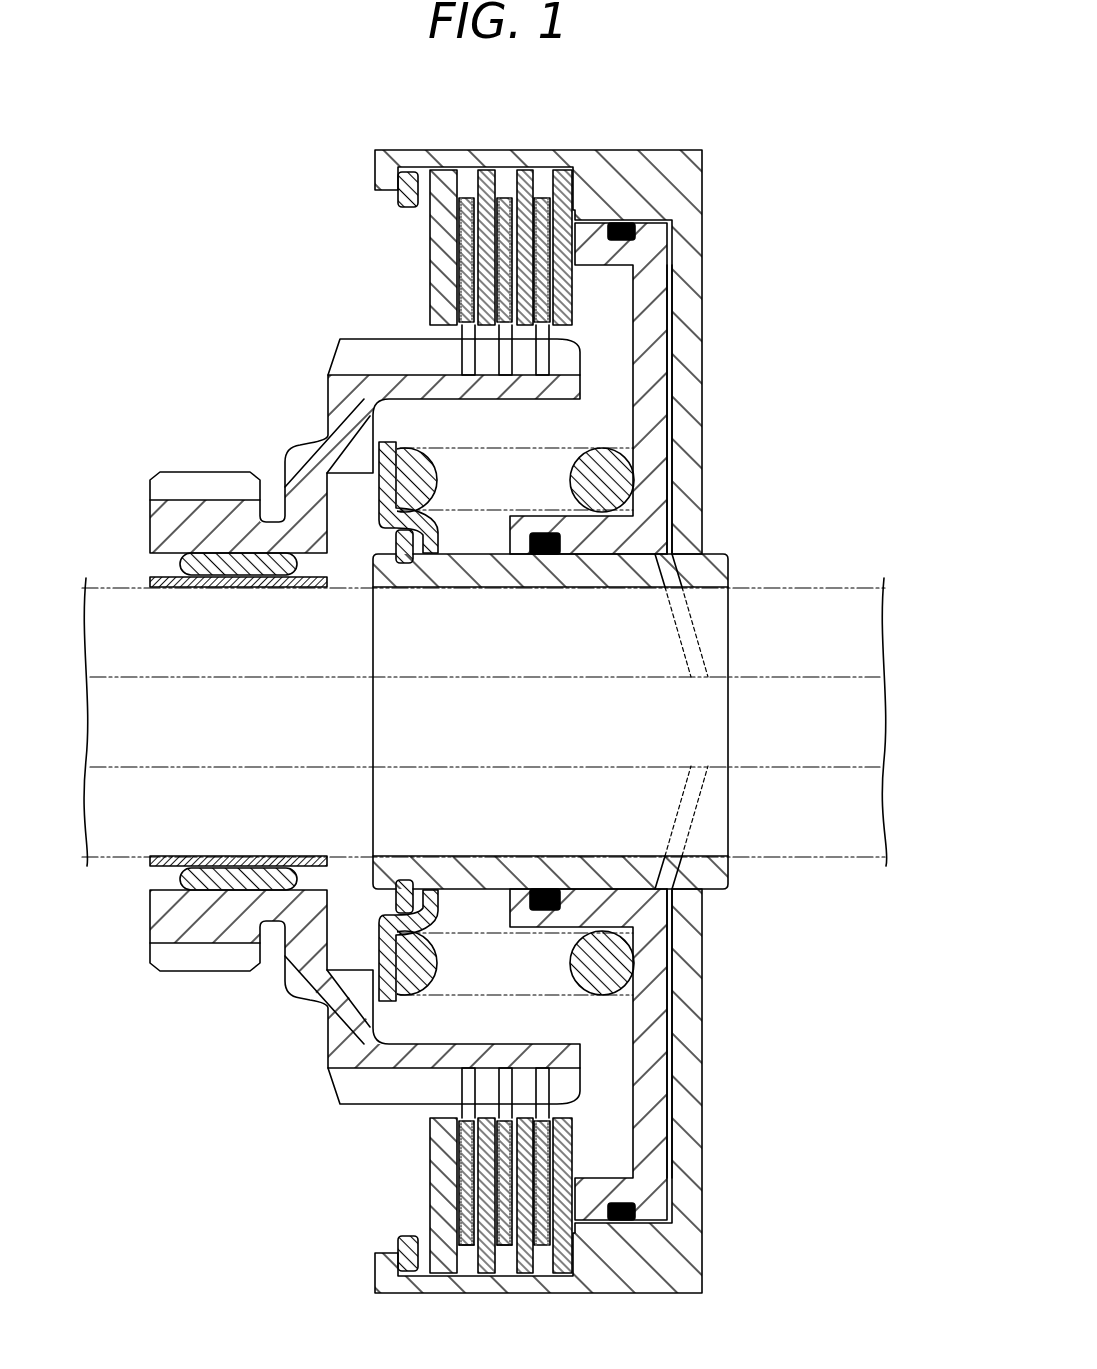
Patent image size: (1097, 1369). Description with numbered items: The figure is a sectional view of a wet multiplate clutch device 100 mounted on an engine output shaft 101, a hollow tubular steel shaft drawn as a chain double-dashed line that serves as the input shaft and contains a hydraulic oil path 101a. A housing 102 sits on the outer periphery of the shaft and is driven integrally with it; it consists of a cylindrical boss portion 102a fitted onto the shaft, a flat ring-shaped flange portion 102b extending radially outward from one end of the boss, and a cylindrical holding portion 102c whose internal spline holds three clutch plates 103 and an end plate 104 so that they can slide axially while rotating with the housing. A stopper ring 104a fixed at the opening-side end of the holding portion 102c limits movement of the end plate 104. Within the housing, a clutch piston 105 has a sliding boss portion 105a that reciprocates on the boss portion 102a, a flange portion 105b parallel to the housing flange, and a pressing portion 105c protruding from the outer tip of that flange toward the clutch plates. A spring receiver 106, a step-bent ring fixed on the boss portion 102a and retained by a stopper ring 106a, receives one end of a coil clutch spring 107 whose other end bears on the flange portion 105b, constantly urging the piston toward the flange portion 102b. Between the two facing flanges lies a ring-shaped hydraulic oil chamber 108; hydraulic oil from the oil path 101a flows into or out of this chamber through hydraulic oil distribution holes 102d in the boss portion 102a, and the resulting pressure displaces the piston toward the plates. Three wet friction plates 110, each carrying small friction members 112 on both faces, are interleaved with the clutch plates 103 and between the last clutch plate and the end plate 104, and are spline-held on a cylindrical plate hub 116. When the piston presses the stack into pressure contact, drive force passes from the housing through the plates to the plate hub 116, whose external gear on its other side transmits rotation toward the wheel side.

The wet multiplate clutch device 100 is at (228, 259).
The engine output shaft 101 is at (883, 570).
The hydraulic oil path 101a is at (878, 745).
The housing 102 is at (582, 691).
The boss portion 102a is at (495, 890).
The flange portion 102b is at (702, 341).
The holding portion 102c is at (600, 150).
The hydraulic oil distribution holes 102d is at (677, 577).
The clutch plate 103 is at (511, 172).
The end plate 104 is at (430, 295).
The stopper ring 104a is at (405, 208).
The clutch piston 105 is at (631, 721).
The sliding boss portion 105a is at (540, 516).
The flange portion 105b is at (667, 1018).
The pressing portion 105c is at (600, 265).
The spring receiver 106 is at (392, 442).
The stopper ring 106a is at (402, 880).
The clutch spring 107 is at (540, 1003).
The hydraulic oil chamber 108 is at (668, 412).
The wet friction plate 110 is at (467, 198).
The friction members 112 is at (457, 1247).
The plate hub 116 is at (328, 392).